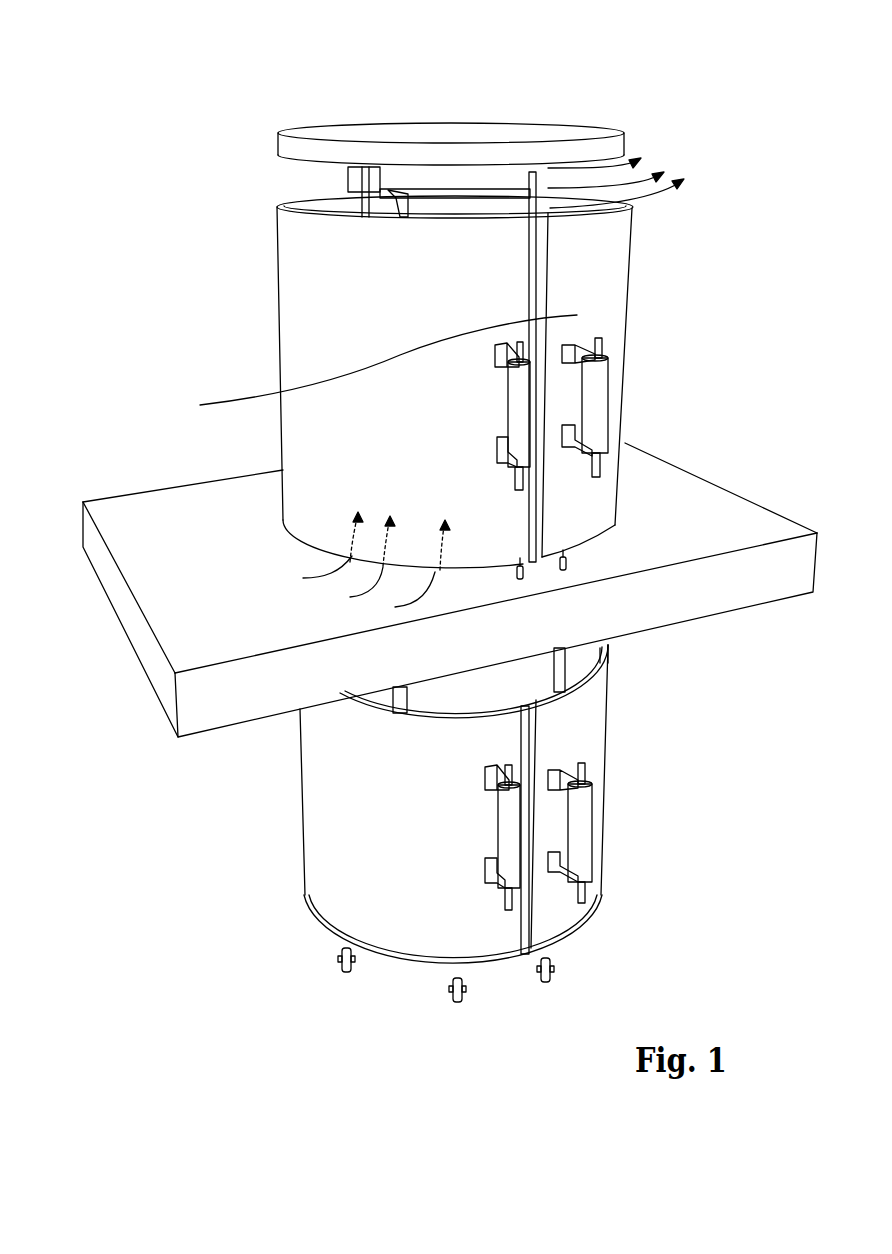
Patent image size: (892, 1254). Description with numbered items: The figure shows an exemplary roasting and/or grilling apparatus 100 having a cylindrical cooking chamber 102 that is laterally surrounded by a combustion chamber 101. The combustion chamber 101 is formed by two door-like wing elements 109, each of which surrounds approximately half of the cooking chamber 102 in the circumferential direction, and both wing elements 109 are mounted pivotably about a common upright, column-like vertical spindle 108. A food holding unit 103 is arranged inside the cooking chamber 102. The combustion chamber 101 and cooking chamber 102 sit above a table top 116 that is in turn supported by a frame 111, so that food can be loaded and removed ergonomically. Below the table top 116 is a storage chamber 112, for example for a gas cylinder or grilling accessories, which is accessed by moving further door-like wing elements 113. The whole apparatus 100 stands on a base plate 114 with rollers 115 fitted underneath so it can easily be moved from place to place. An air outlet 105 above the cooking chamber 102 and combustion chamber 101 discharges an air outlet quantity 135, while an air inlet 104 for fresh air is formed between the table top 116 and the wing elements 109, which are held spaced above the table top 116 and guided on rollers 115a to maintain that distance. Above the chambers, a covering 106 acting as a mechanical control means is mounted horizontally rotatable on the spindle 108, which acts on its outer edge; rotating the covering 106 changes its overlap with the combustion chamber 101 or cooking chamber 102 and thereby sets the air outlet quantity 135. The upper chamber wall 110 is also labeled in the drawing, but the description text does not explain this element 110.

The roasting and/or grilling apparatus 100 is at (232, 90).
The combustion chamber 101 is at (290, 206).
The cooking chamber 102 is at (502, 208).
The food holding unit 103 is at (348, 192).
The air inlet 104 is at (312, 553).
The air outlet 105 is at (606, 171).
The covering 106 is at (480, 135).
The spindle 108 is at (350, 172).
The door-like wing elements 109 is at (322, 362).
The upper chamber 110 is at (322, 284).
The frame 111 is at (360, 710).
The storage chamber 112 is at (482, 688).
The door-like wing elements 113 is at (357, 807).
The base plate 114 is at (520, 967).
The rollers 115 is at (345, 973).
The rollers 115a is at (540, 557).
The table top 116 is at (243, 630).
The air outlet quantity 135 is at (626, 181).